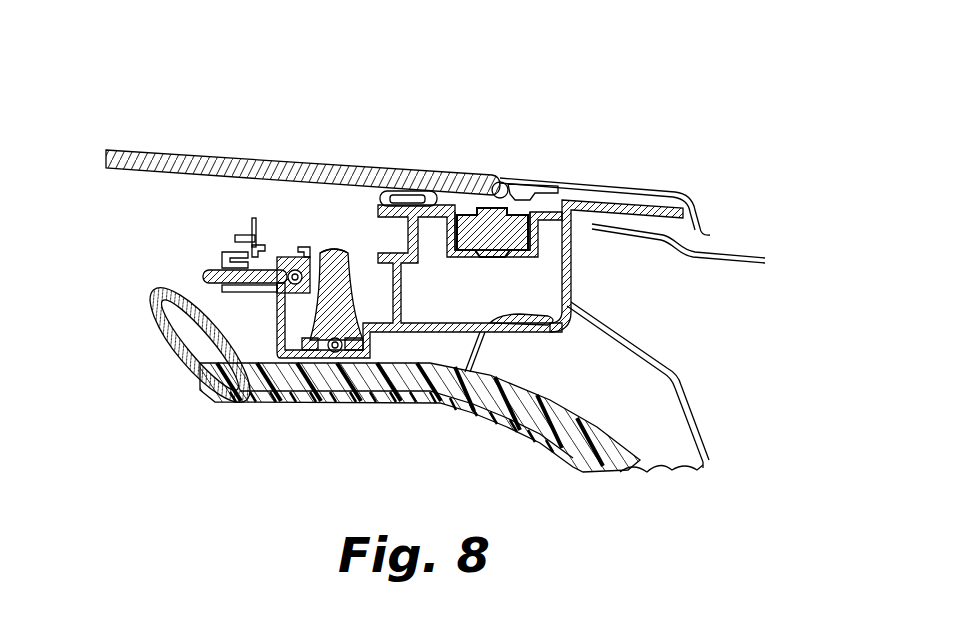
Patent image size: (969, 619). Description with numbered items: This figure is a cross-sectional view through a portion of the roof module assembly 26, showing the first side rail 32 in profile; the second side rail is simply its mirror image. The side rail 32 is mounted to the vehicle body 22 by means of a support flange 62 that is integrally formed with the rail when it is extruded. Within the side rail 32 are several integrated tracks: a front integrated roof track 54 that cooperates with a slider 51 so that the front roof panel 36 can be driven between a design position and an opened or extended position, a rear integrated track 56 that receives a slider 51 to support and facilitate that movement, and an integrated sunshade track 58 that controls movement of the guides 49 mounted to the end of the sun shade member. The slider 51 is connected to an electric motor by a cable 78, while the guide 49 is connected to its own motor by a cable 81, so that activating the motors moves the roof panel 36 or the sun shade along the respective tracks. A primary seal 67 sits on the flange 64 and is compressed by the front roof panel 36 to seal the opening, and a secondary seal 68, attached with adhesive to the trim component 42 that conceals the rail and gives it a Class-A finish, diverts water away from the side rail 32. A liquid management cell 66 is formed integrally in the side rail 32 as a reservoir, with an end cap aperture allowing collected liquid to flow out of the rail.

The vehicle body 22 is at (728, 262).
The roof module assembly 26 is at (303, 98).
The first side rail 32 is at (258, 203).
The front roof panel 36 is at (148, 152).
The trim component 42 is at (372, 388).
The guide 49 is at (205, 272).
The slider 51 is at (322, 250).
The front integrated roof track 54 is at (347, 323).
The rear integrated track 56 is at (465, 253).
The integrated sunshade track 58 is at (200, 348).
The support flange 62 is at (640, 197).
The flange 64 is at (457, 213).
The liquid management cell 66 is at (550, 277).
The primary seal 67 is at (400, 192).
The secondary seal 68 is at (397, 203).
The cable 78 is at (331, 351).
The cable 81 is at (291, 283).